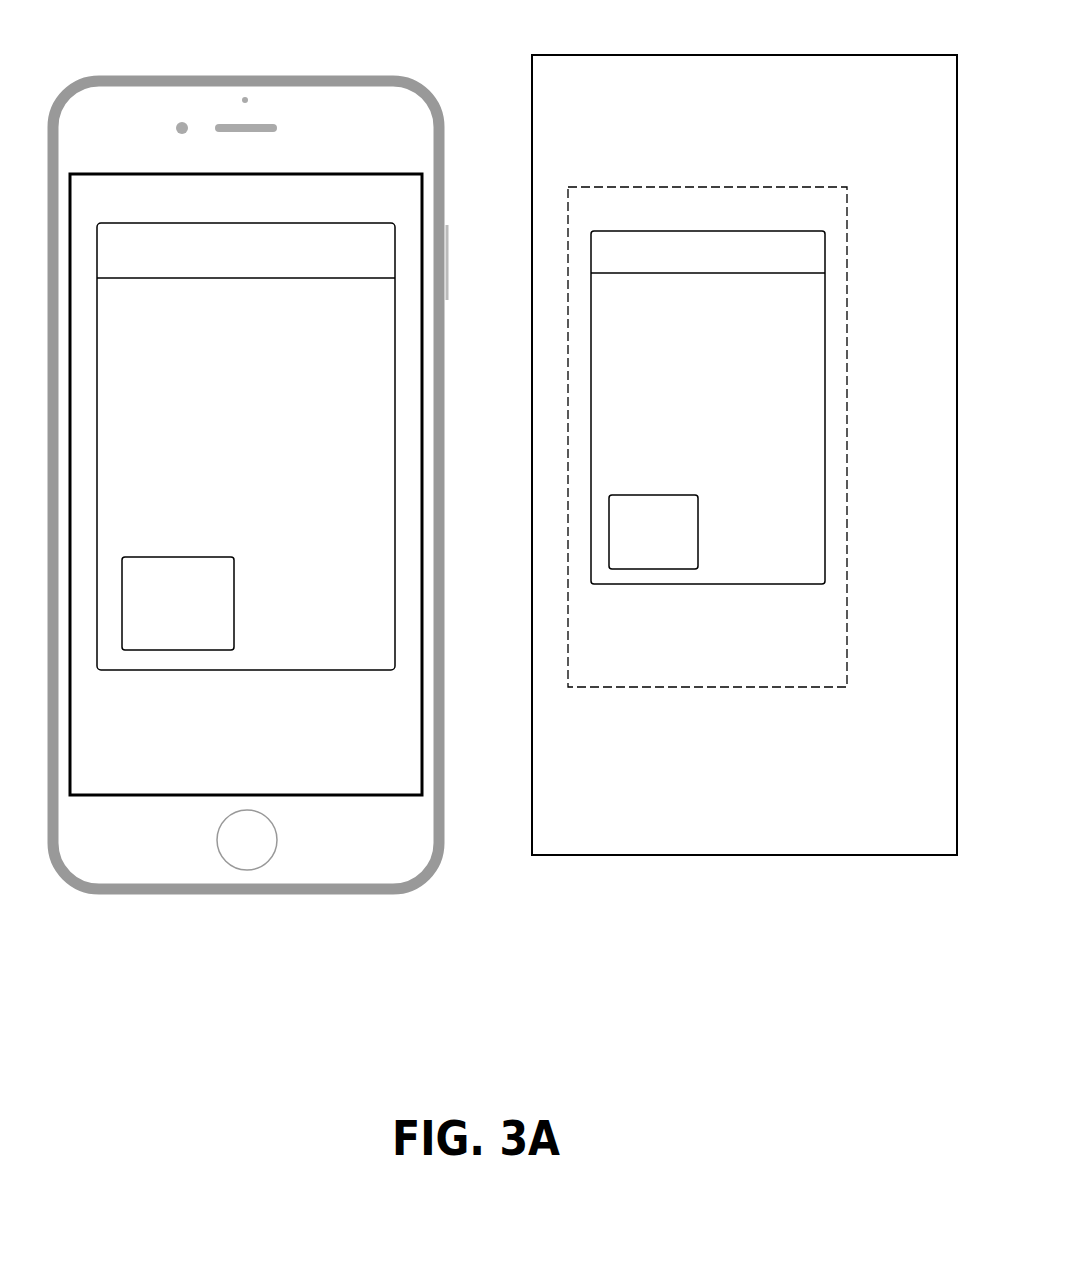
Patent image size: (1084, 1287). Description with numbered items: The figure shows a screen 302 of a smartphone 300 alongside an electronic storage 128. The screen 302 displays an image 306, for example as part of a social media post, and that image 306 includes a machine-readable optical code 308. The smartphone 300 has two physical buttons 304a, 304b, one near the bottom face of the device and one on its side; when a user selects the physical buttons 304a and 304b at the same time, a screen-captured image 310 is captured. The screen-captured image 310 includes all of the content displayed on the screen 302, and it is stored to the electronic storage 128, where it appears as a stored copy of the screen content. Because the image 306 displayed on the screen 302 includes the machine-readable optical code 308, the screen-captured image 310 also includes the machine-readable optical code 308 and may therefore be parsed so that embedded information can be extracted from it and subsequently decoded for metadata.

The smartphone 300 is at (152, 73).
The screen 302 is at (148, 205).
The physical button 304a is at (233, 855).
The physical button 304b is at (448, 273).
The image 306 is at (398, 493).
The machine-readable optical code 308 is at (225, 594).
The screen-captured image 310 is at (755, 187).
The electronic storage 128 is at (744, 455).